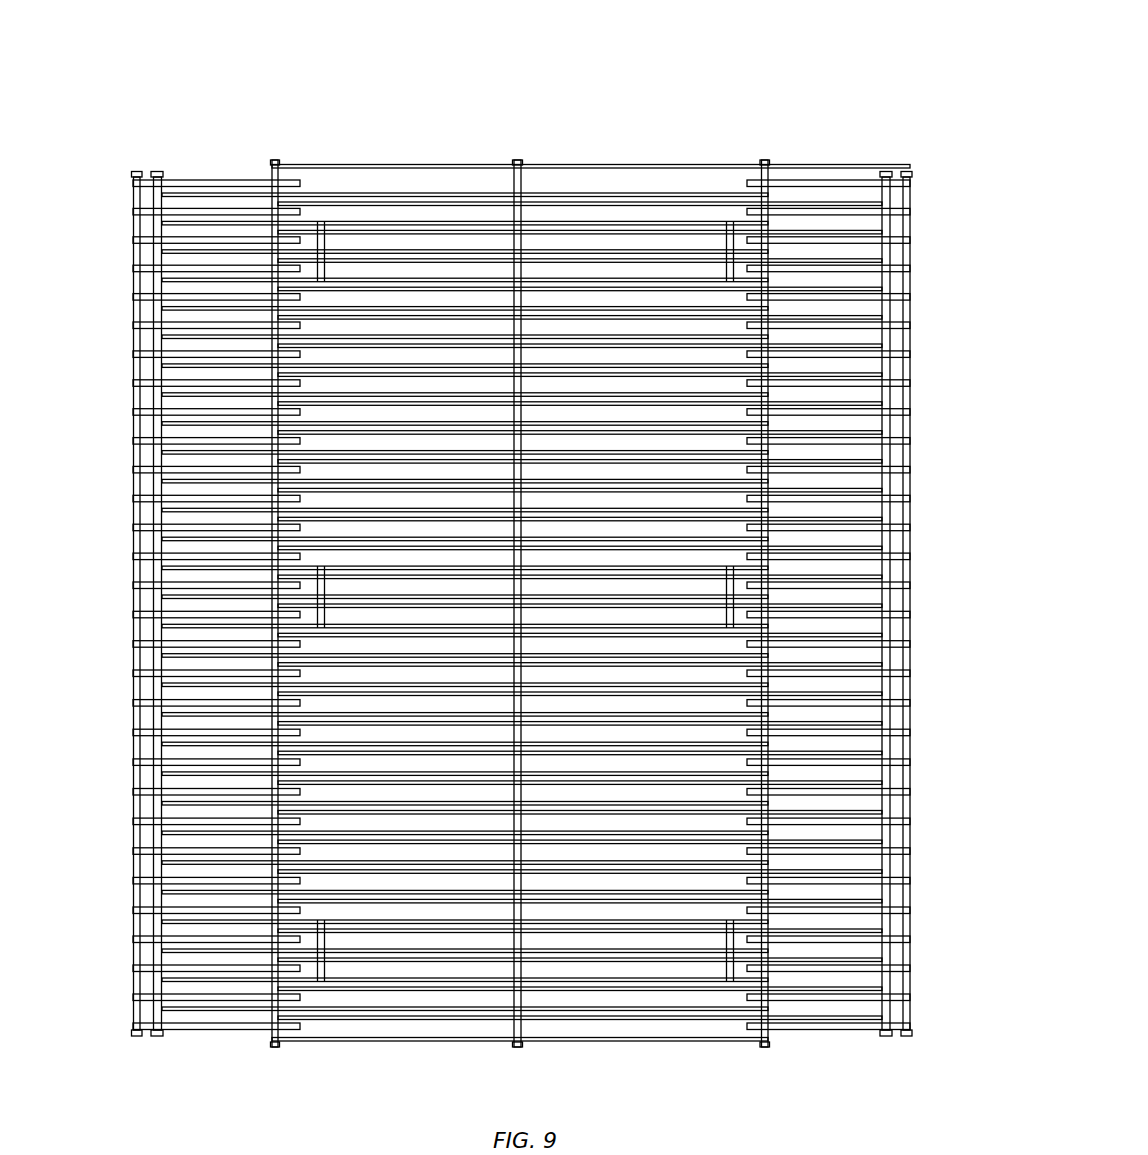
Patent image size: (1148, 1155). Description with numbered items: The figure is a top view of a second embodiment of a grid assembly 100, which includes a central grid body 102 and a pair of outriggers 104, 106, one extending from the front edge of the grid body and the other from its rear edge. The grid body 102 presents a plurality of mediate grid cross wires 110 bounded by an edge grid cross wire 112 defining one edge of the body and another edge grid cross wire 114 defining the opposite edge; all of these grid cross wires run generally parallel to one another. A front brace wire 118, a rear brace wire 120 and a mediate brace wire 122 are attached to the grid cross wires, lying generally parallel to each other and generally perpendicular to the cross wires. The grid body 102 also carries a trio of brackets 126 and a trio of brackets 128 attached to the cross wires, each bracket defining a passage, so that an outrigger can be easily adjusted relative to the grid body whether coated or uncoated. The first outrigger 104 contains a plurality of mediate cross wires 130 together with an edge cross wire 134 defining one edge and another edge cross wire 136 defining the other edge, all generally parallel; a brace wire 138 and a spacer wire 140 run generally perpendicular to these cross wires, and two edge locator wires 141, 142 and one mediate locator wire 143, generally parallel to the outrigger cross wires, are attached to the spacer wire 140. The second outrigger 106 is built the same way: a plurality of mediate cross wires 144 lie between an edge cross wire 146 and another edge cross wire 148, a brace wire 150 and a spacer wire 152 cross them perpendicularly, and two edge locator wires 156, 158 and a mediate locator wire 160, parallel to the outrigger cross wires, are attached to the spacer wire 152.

The grid assembly 100 is at (518, 555).
The grid body 102 is at (519, 578).
The outrigger 104 is at (243, 210).
The outrigger 106 is at (852, 591).
The mediate grid cross wires 110 is at (388, 221).
The edge grid cross wire 112 is at (433, 1042).
The edge grid cross wire 114 is at (436, 164).
The front brace wire 118 is at (277, 165).
The rear brace wire 120 is at (765, 162).
The mediate brace wire 122 is at (521, 165).
The brackets 126 is at (327, 240).
The brackets 128 is at (724, 240).
The mediate cross wires 130 is at (195, 352).
The edge cross wire 134 is at (194, 591).
The edge cross wire 136 is at (213, 1032).
The brace wire 138 is at (136, 895).
The spacer wire 140 is at (160, 655).
The edge locator wire 141 is at (188, 250).
The edge locator wire 142 is at (195, 953).
The mediate locator wire 143 is at (180, 598).
The mediate cross wires 144 is at (840, 288).
The edge cross wire 146 is at (835, 1030).
The edge cross wire 148 is at (845, 203).
The brace wire 150 is at (912, 184).
The spacer wire 152 is at (888, 432).
The edge locator wire 156 is at (845, 250).
The edge locator wire 158 is at (835, 942).
The mediate locator wire 160 is at (838, 592).